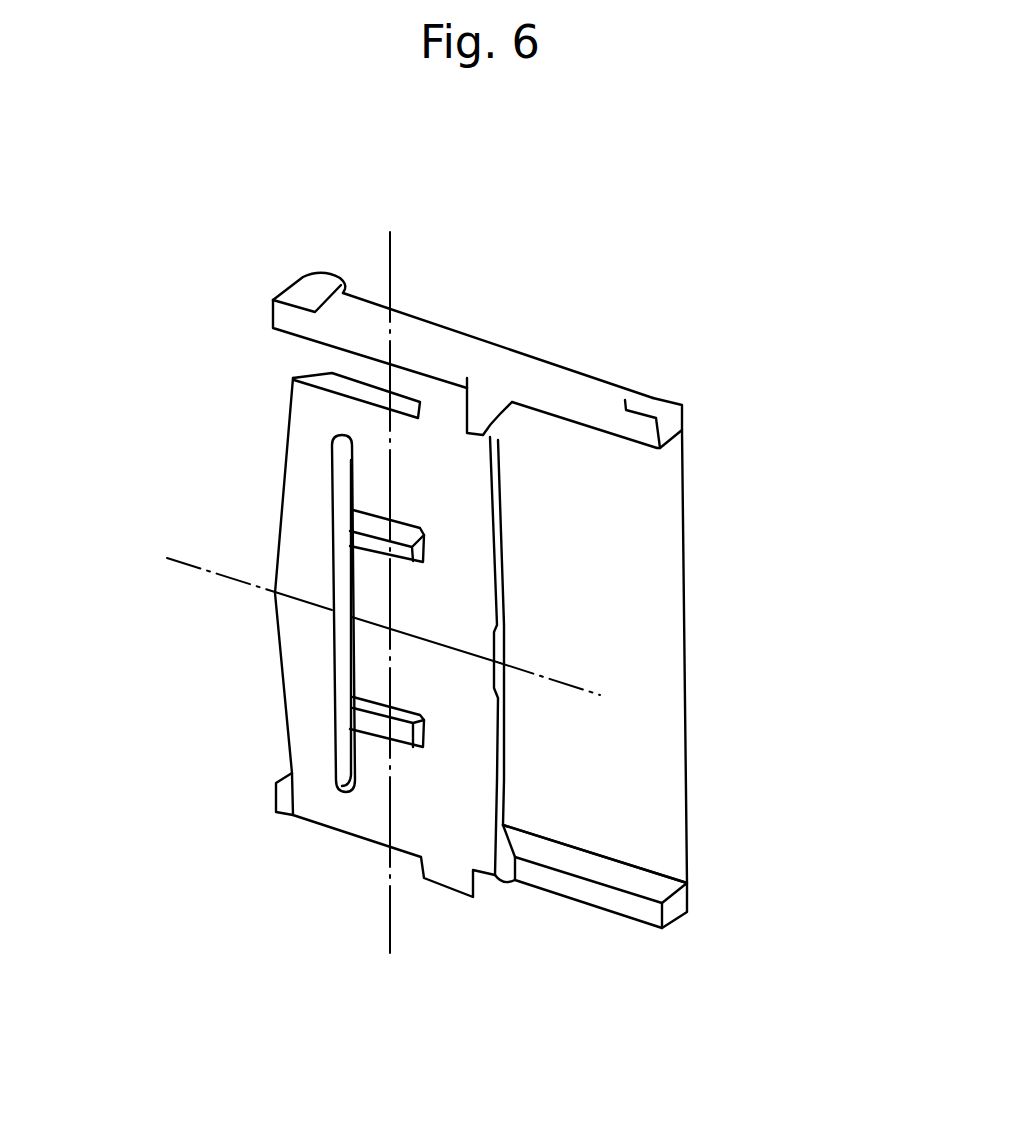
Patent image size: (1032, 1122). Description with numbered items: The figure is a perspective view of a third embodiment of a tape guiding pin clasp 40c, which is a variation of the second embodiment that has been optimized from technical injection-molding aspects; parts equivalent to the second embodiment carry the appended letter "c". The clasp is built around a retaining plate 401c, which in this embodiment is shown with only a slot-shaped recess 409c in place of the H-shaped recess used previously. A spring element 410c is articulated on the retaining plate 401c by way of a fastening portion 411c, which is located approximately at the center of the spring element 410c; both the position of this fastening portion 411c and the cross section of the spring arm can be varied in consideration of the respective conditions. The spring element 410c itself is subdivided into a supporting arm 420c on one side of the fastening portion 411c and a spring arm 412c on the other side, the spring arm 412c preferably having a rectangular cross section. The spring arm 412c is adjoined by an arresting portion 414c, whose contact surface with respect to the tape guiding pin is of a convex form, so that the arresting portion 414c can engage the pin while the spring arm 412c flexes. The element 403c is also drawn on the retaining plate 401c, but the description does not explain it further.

The tape guiding pin clasp 40c is at (568, 326).
The spring element 410c is at (488, 345).
The arresting portion 414c is at (293, 284).
The spring arm 412c is at (355, 341).
The fastening portion 411c is at (455, 372).
The supporting arm 420c is at (560, 407).
The retaining plate 401c is at (443, 762).
The slot-shaped recess 409c is at (344, 669).
The tab 403c is at (405, 551).